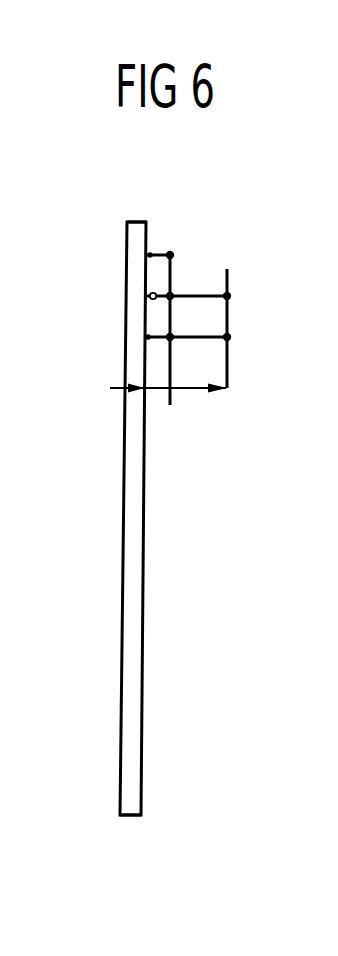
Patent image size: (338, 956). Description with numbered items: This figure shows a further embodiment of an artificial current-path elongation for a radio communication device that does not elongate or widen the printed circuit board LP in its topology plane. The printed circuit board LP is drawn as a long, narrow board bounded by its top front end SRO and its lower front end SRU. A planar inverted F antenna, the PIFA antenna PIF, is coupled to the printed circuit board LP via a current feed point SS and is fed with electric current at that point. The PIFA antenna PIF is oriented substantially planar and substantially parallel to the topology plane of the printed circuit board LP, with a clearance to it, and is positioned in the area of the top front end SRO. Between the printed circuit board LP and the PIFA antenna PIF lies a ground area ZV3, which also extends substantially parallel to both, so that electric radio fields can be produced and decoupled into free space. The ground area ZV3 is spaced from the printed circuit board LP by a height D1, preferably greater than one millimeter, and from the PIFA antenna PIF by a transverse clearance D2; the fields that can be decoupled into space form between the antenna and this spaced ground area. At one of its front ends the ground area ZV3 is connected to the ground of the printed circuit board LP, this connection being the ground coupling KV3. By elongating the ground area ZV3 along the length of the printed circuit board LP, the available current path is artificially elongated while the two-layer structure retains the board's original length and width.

The printed circuit board LP is at (165, 622).
The top front end SRO is at (137, 218).
The lower front end SRU is at (122, 817).
The ground coupling KV3 is at (158, 252).
The ground area ZV3 is at (168, 390).
The current feed point SS is at (148, 297).
The PIFA antenna PIF is at (248, 315).
The height D1 is at (157, 390).
The transverse clearance D2 is at (197, 390).